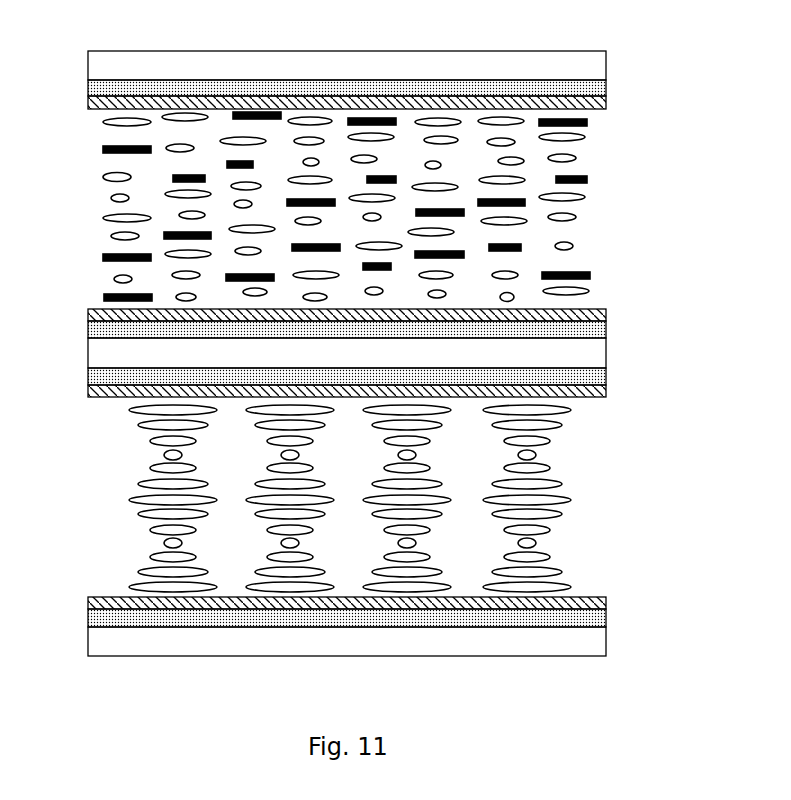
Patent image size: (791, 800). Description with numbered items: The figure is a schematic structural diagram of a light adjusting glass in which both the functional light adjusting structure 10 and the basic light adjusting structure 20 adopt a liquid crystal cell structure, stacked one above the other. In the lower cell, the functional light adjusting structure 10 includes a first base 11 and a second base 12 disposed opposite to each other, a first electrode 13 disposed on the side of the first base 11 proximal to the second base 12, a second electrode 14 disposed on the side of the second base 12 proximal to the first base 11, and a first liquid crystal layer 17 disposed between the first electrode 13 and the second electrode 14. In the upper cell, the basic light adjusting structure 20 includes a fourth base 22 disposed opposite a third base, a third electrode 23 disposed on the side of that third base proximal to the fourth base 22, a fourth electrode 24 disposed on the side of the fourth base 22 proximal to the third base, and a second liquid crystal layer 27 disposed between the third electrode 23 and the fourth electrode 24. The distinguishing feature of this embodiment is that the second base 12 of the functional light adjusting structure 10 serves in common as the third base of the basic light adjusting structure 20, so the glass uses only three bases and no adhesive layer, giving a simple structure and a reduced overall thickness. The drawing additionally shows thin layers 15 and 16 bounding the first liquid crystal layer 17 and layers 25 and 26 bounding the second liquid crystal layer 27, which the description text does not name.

The functional light adjusting structure 10 is at (72, 350).
The first base 11 is at (585, 646).
The second base 12 is at (585, 353).
The first electrode 13 is at (585, 616).
The second electrode 14 is at (585, 377).
The first alignment layer 15 is at (585, 603).
The second alignment layer 16 is at (585, 396).
The first liquid crystal layer 17 is at (585, 494).
The basic light adjusting structure 20 is at (72, 60).
The fourth base 22 is at (585, 63).
The third electrode 23 is at (585, 330).
The fourth electrode 24 is at (585, 88).
The third alignment layer 25 is at (585, 314).
The fourth alignment layer 26 is at (585, 103).
The second liquid crystal layer 27 is at (586, 202).